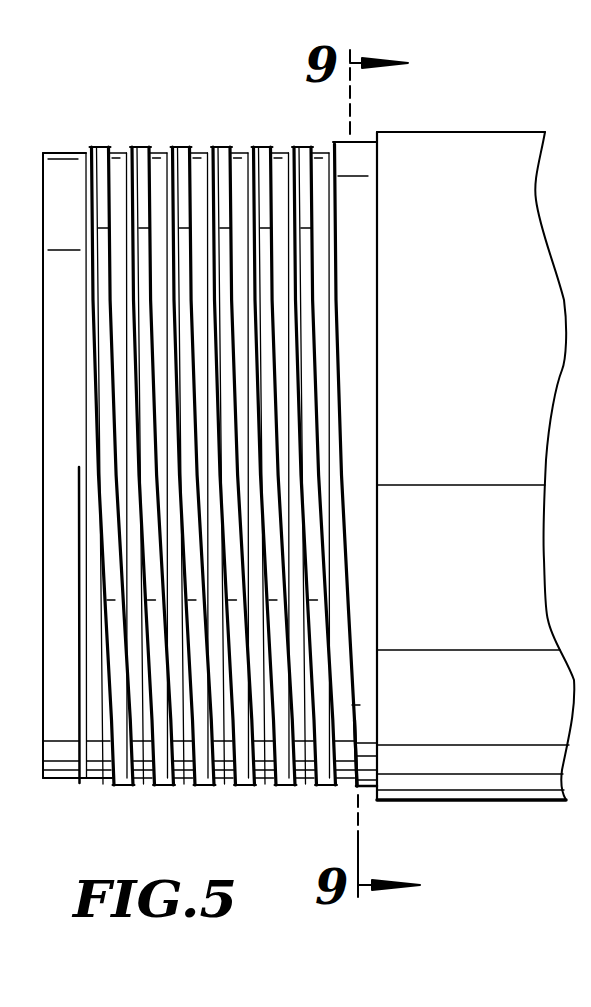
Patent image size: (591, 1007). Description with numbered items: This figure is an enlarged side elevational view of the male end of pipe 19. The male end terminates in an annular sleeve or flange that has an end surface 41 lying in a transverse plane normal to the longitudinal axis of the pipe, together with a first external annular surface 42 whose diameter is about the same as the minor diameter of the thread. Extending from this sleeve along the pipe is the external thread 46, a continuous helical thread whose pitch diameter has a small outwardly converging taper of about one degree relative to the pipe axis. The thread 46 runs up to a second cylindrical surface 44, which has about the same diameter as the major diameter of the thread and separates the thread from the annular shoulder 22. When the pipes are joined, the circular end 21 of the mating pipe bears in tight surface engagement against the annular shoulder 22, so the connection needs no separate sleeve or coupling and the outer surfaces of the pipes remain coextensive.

The pipe 19 is at (498, 165).
The end 21 is at (0, 124).
The annular shoulder 22 is at (368, 140).
The end surface 41 is at (43, 206).
The first external annular surface 42 is at (72, 273).
The second cylindrical surface 44 is at (367, 728).
The external thread 46 is at (200, 797).